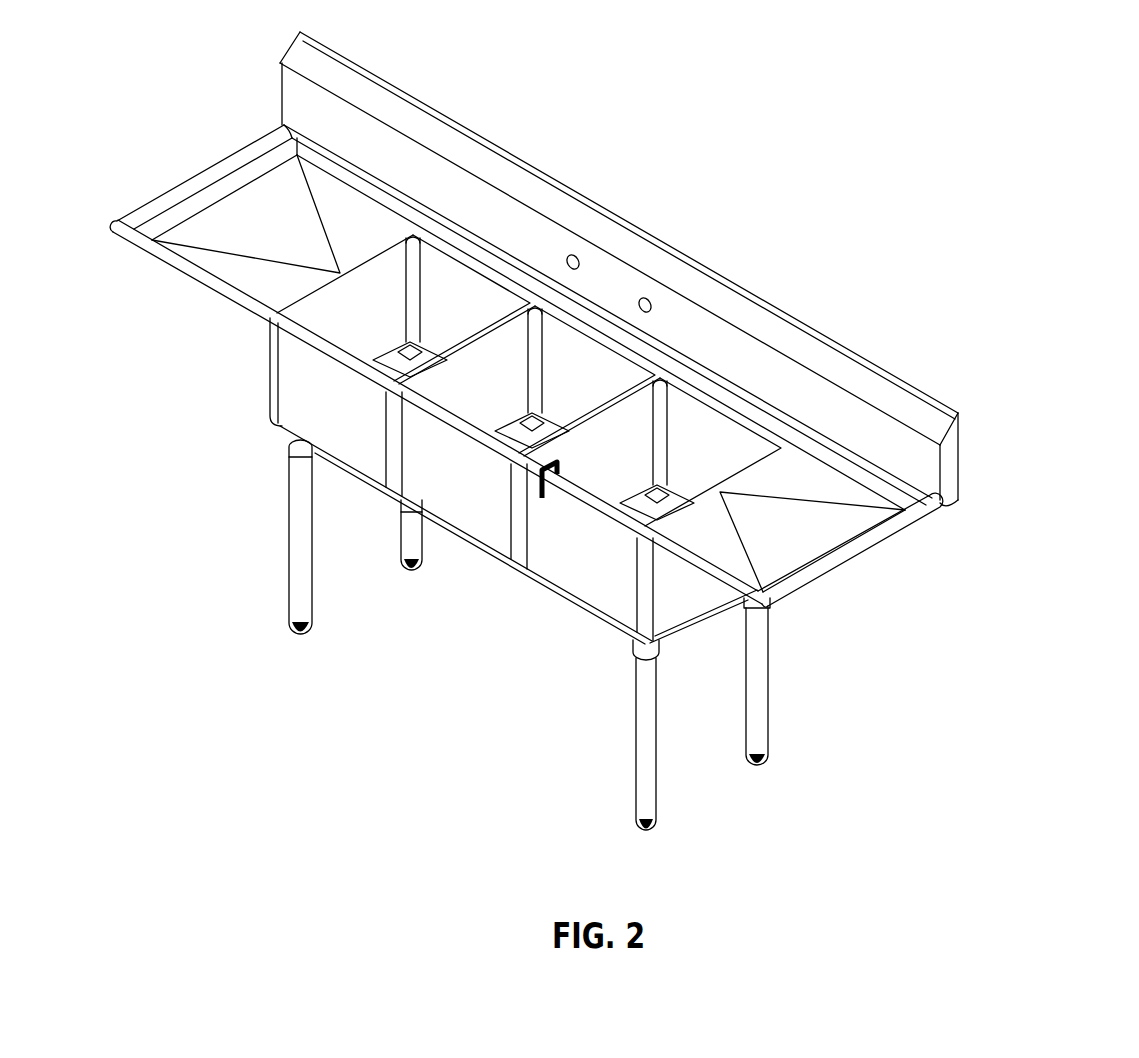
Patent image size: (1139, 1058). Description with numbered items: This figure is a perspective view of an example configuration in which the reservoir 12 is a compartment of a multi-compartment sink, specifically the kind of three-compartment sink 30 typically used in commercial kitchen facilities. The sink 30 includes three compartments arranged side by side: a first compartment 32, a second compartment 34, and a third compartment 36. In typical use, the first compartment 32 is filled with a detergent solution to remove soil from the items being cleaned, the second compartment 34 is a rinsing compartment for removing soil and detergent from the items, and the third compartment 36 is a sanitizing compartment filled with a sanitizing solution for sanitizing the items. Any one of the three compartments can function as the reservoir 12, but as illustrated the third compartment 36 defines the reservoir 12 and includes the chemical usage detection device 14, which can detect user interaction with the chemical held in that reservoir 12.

The sink 30 is at (620, 431).
The first compartment 32 is at (350, 327).
The second compartment 34 is at (487, 421).
The third compartment 36 is at (628, 497).
The reservoir 12 is at (627, 565).
The chemical usage detection device 14 is at (542, 482).